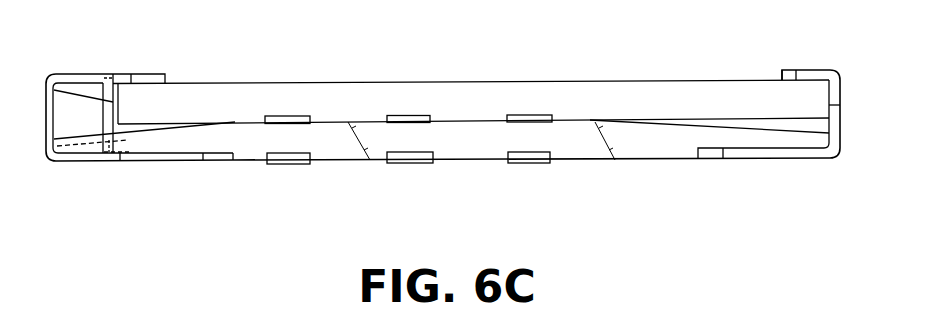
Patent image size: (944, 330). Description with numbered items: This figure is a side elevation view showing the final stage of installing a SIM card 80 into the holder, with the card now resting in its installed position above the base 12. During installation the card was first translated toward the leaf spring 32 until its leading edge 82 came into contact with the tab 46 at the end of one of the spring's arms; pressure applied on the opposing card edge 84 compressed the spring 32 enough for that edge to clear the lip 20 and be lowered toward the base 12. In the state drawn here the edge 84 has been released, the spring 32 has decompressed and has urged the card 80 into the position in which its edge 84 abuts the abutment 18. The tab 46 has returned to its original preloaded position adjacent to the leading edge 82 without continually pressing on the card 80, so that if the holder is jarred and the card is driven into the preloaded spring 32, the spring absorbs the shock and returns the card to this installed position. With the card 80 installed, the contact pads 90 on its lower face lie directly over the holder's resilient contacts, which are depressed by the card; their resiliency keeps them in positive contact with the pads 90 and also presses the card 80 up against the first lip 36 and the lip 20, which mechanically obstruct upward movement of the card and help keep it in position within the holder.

The base 12 is at (652, 160).
The abutment 18 is at (840, 127).
The lip 20 is at (806, 70).
The leaf spring 32 is at (72, 107).
The first lip 36 is at (138, 73).
The tab 46 is at (110, 102).
The SIM card 80 is at (700, 100).
The leading edge 82 is at (117, 105).
The opposing card edge 84 is at (829, 96).
The contact pads 90 is at (289, 116).